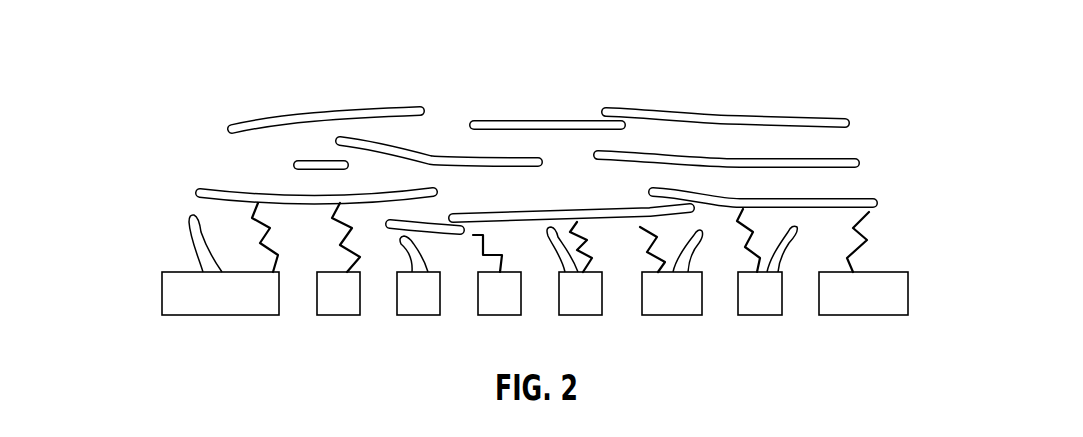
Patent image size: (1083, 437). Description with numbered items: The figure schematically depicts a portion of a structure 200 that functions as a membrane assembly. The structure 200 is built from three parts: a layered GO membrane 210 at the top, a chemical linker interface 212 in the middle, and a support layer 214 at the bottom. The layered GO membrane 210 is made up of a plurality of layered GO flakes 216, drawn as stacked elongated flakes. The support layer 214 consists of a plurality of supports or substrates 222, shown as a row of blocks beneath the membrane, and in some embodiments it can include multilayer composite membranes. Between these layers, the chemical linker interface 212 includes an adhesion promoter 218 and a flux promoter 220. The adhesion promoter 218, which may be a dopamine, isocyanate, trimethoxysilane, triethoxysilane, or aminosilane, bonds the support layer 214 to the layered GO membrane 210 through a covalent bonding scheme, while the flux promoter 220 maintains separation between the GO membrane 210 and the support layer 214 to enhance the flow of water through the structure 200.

The structure 200 is at (478, 94).
The layered GO membrane 210 is at (215, 161).
The chemical linker interface 212 is at (186, 241).
The support layer 214 is at (148, 289).
The layered GO flakes 216 is at (774, 157).
The adhesion promoter 218 is at (869, 229).
The flux promoter 220 is at (795, 226).
The supports or substrates 222 is at (908, 292).